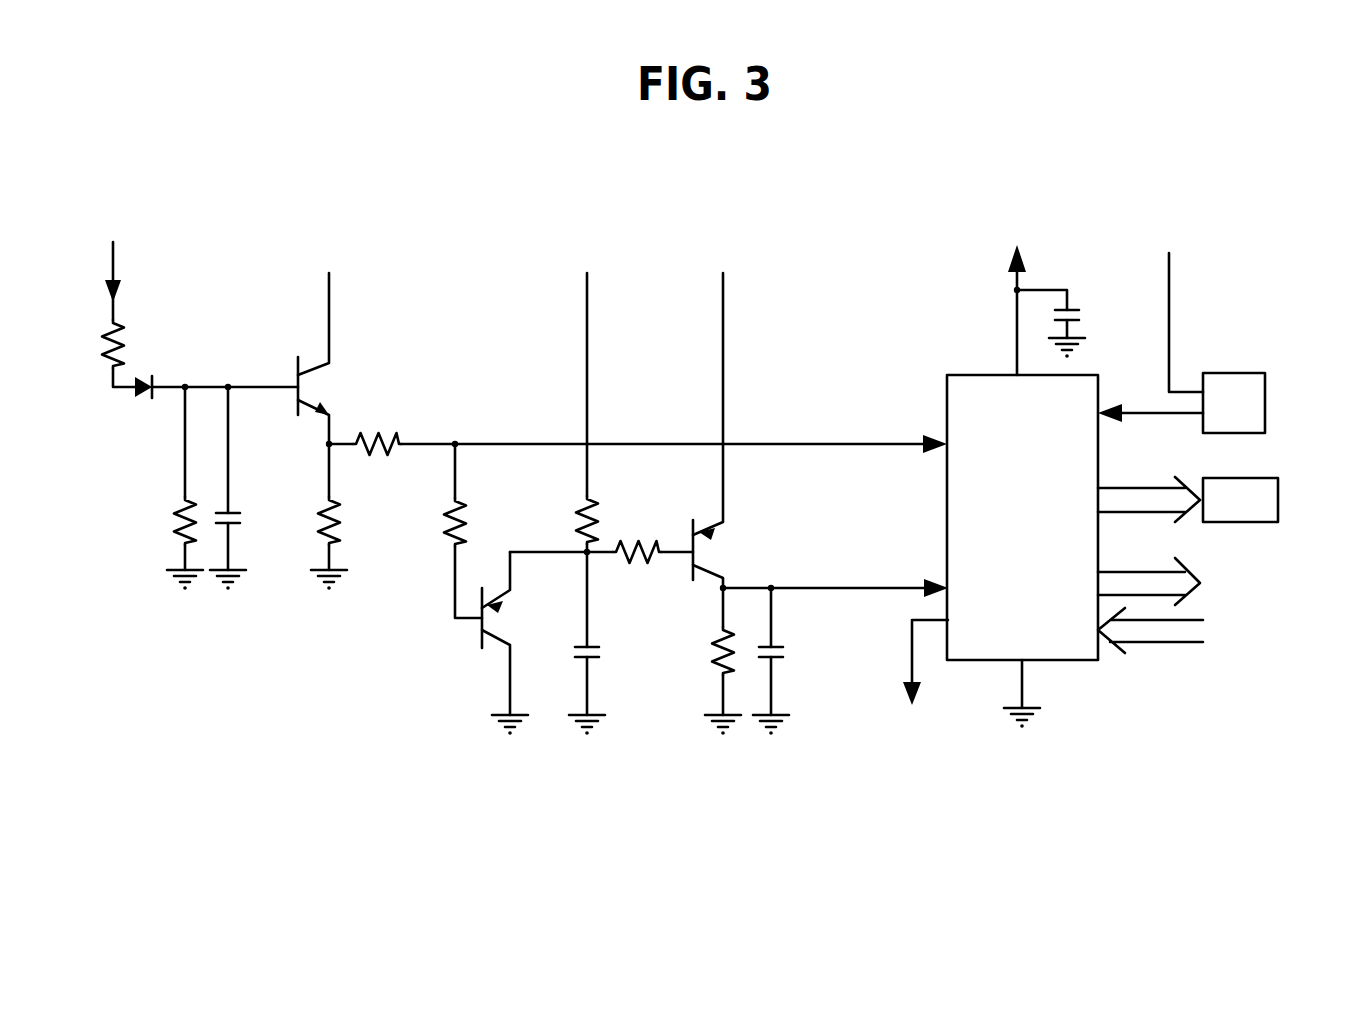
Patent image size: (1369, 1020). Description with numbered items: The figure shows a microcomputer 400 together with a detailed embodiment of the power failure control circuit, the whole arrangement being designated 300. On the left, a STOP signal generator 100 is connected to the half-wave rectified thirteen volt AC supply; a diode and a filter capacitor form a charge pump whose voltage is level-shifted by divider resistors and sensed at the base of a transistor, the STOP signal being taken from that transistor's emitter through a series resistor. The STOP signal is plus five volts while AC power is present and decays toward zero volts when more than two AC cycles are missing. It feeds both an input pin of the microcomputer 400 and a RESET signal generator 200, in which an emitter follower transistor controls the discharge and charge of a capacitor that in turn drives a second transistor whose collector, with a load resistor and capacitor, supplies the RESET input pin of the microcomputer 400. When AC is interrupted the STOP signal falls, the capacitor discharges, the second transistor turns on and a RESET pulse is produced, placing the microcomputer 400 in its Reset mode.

The STOP signal generator 100 is at (250, 715).
The RESET signal generator 200 is at (648, 742).
The control circuit 300 is at (431, 192).
The microcomputer 400 is at (915, 360).